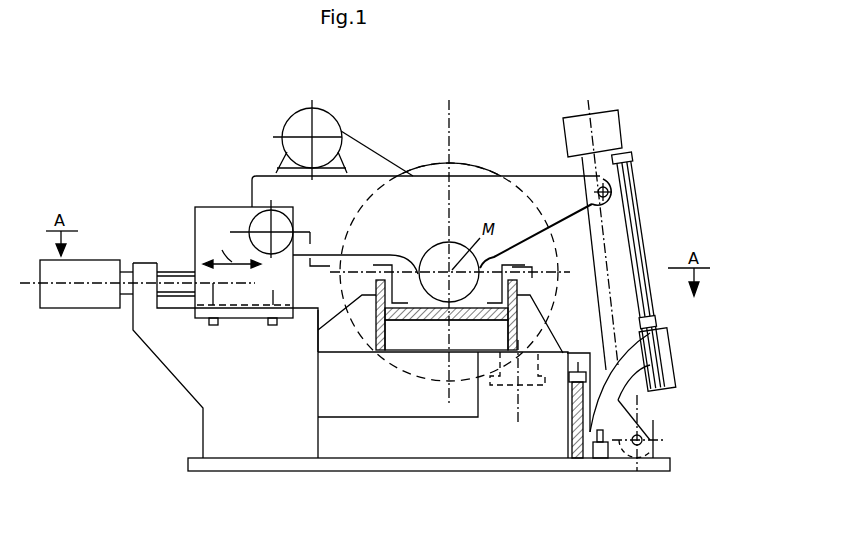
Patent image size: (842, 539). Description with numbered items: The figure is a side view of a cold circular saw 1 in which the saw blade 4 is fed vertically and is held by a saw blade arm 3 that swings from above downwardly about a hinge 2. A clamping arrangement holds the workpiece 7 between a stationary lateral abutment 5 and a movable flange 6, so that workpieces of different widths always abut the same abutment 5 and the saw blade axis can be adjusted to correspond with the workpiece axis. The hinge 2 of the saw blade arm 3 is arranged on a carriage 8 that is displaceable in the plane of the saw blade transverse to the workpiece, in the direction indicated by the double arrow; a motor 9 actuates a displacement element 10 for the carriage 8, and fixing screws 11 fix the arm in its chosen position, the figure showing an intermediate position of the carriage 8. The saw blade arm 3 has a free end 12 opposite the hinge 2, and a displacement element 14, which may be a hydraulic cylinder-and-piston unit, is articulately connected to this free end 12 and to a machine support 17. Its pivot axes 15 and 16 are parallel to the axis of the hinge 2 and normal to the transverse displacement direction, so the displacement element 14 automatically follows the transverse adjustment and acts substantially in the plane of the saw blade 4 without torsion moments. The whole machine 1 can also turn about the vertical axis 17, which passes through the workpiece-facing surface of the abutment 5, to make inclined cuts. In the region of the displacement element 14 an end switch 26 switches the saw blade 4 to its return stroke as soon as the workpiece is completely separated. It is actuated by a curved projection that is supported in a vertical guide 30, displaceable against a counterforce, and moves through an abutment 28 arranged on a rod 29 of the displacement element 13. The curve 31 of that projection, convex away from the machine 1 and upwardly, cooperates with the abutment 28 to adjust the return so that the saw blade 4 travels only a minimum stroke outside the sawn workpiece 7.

The cold circular saw 1 is at (150, 146).
The hinge 2 is at (258, 222).
The saw blade arm 3 is at (390, 205).
The saw blade 4 is at (466, 163).
The lateral abutment 5 is at (556, 340).
The movable flange 6 is at (343, 327).
The workpiece 7 is at (430, 318).
The carriage 8 is at (224, 218).
The motor 9 is at (108, 308).
The displacement element for the carriage 10 is at (173, 280).
The fixing screws 11 is at (273, 326).
The free end 12 is at (618, 176).
The displacement element 13 is at (618, 471).
The displacement element 14 is at (630, 251).
The pivot axis 15 is at (604, 200).
The pivot axis 16 is at (638, 471).
The machine support 17 is at (514, 431).
The end switch 26 is at (600, 471).
The abutment 28 is at (656, 327).
The rod 29 is at (644, 212).
The vertical guide 30 is at (572, 428).
The curve 31 is at (622, 348).